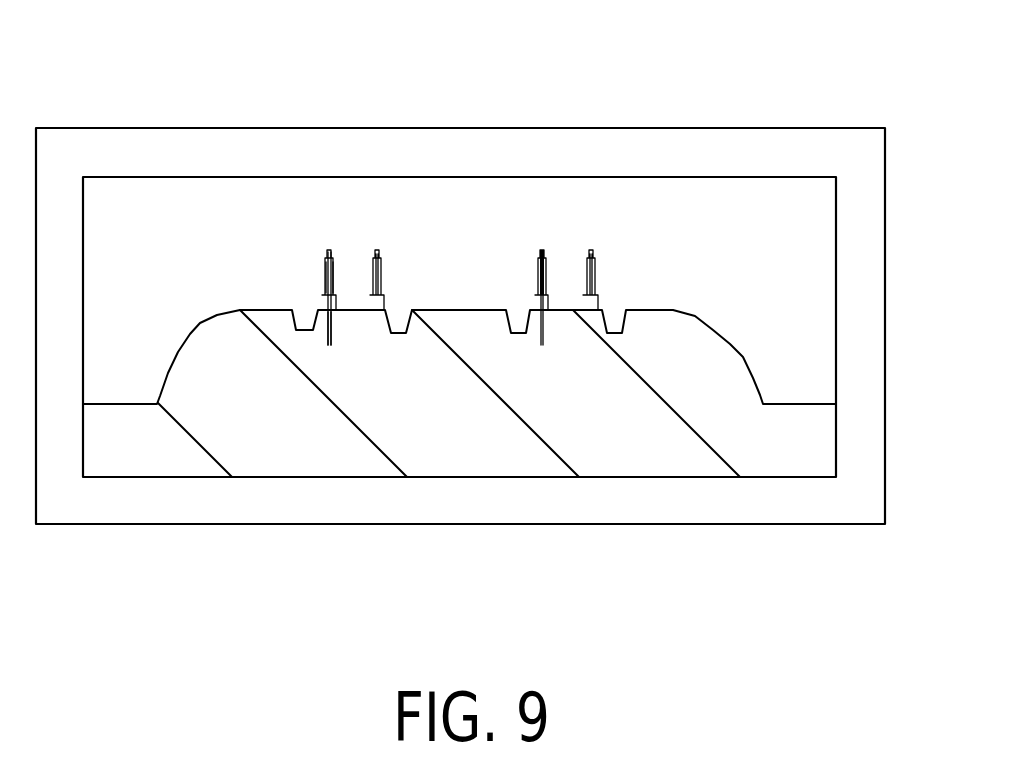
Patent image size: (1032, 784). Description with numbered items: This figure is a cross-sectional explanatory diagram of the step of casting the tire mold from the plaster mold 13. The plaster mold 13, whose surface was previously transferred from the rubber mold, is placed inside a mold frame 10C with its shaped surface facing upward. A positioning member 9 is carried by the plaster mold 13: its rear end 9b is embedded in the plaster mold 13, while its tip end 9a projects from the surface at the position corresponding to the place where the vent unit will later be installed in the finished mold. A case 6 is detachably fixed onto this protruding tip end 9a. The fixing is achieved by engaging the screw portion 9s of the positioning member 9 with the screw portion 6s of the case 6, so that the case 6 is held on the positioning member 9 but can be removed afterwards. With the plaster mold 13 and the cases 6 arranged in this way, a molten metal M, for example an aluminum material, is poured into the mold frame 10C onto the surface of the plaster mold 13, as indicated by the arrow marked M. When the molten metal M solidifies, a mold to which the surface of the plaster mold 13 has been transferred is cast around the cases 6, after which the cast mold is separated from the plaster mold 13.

The mold frame 10C is at (269, 144).
The plaster mold 13 is at (475, 468).
The case 6 is at (363, 268).
The positioning member 9 is at (350, 345).
The tip end 9a is at (323, 273).
The rear end 9b is at (327, 334).
The screw portion of the case 6s is at (546, 262).
The screw portion of the positioning member 9s is at (538, 262).
The molten metal M is at (823, 253).